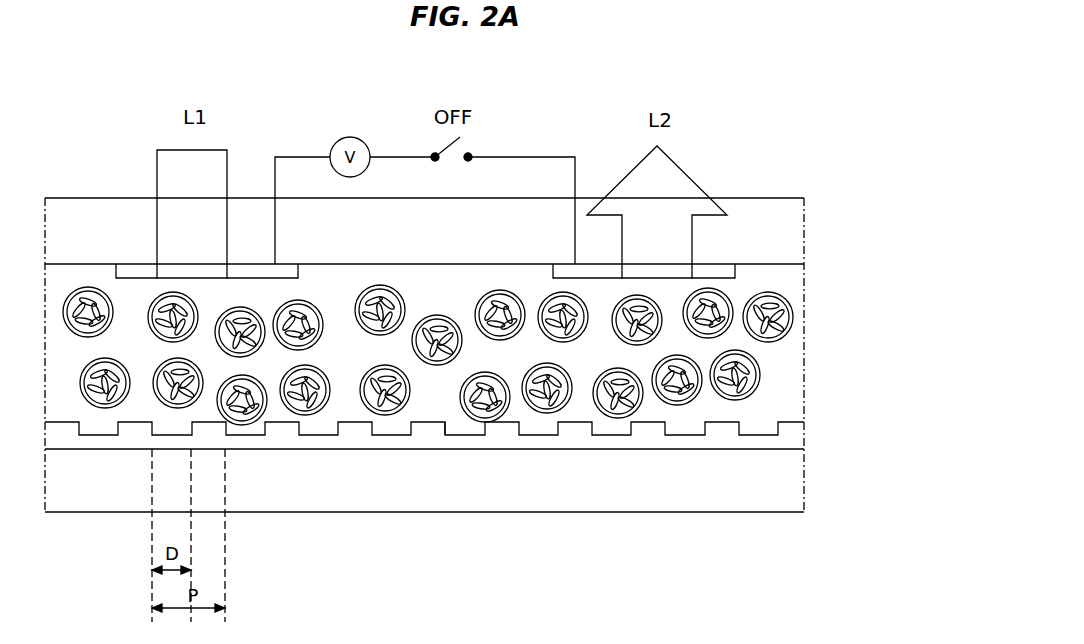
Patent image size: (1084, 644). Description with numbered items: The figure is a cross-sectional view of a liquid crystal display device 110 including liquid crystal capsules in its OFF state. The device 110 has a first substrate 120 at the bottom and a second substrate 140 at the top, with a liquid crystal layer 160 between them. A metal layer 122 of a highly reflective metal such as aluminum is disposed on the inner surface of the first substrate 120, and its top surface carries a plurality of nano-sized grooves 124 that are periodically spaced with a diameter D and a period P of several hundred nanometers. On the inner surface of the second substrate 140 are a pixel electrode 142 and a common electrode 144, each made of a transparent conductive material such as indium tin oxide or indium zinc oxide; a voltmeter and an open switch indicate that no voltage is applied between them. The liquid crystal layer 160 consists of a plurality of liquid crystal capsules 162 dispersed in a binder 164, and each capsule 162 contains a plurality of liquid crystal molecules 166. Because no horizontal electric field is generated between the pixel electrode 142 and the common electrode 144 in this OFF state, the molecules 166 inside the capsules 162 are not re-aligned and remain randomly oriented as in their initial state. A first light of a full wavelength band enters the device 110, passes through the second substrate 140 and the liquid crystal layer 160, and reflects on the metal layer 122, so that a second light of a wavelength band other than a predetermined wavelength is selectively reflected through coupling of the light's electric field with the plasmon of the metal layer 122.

The liquid crystal display device 110 is at (412, 67).
The first substrate 120 is at (795, 480).
The metal layer 122 is at (795, 439).
The groove 124 is at (447, 424).
The second substrate 140 is at (793, 221).
The pixel electrode 142 is at (137, 268).
The common electrode 144 is at (708, 268).
The liquid crystal layer 160 is at (908, 317).
The liquid crystal capsule 162 is at (782, 328).
The binder 164 is at (790, 360).
The liquid crystal molecule 166 is at (782, 298).